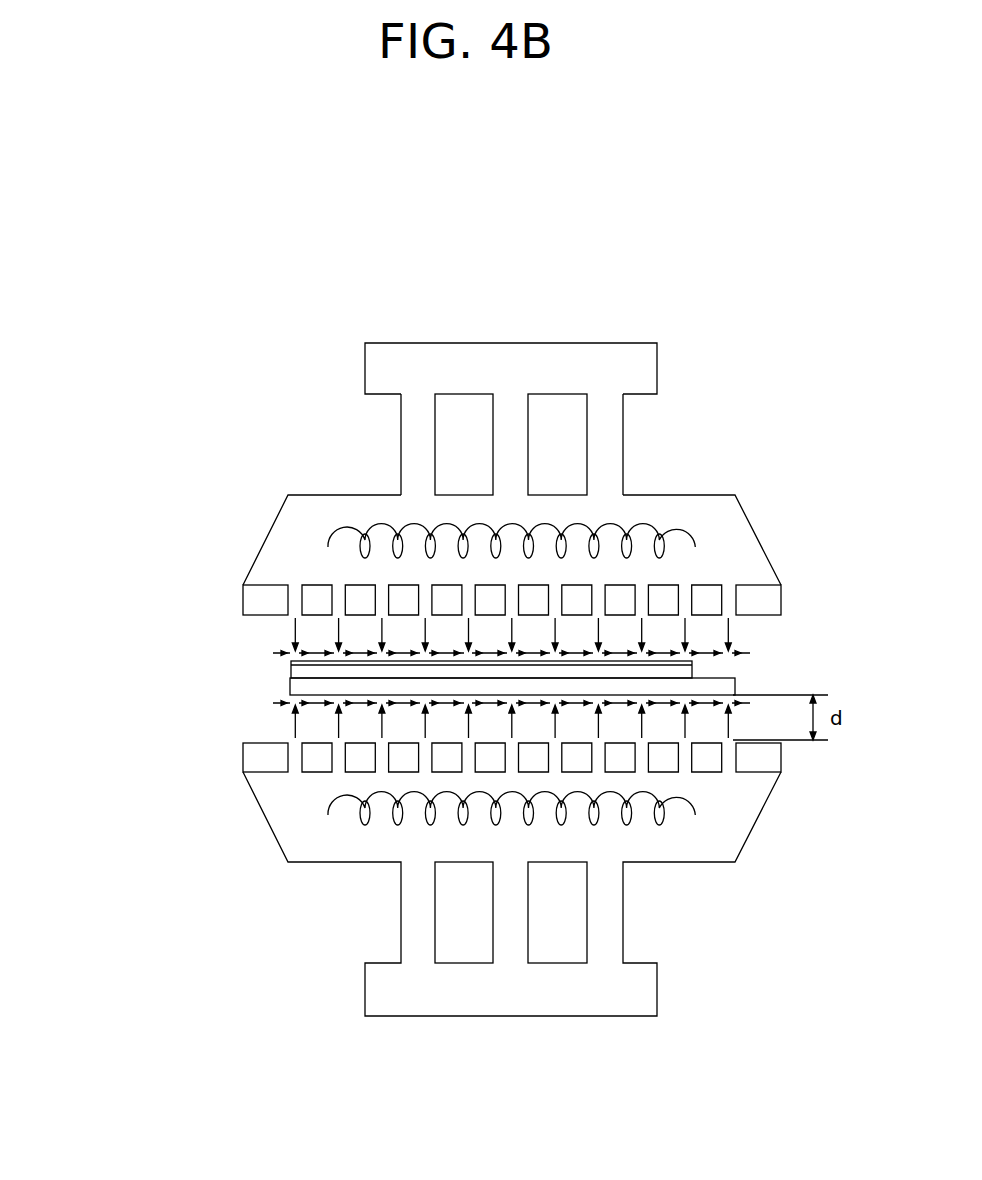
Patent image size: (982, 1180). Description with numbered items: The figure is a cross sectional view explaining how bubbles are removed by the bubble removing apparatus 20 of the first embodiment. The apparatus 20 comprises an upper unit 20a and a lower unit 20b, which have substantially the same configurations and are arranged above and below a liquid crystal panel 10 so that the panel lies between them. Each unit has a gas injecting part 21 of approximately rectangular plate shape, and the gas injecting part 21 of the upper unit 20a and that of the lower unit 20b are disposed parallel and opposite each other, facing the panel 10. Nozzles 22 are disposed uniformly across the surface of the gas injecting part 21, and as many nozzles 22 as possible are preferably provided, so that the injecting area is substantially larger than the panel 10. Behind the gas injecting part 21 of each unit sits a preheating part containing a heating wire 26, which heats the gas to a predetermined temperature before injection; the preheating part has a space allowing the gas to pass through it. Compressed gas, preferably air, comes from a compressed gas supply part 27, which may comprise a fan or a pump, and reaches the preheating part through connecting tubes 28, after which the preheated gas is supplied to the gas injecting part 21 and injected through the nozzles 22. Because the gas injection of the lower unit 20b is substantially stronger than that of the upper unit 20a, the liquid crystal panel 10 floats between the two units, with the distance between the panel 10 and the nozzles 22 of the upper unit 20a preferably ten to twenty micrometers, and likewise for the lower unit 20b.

The liquid crystal panel 10 is at (745, 675).
The bubble removing apparatus 20 is at (92, 536).
The upper unit 20a is at (225, 571).
The lower unit 20b is at (231, 754).
The gas injecting part 21 is at (775, 598).
The nozzles 22 is at (285, 605).
The heating wire 26 is at (690, 535).
The compressed gas supply part 27 is at (645, 363).
The connecting tubes 28 is at (615, 437).